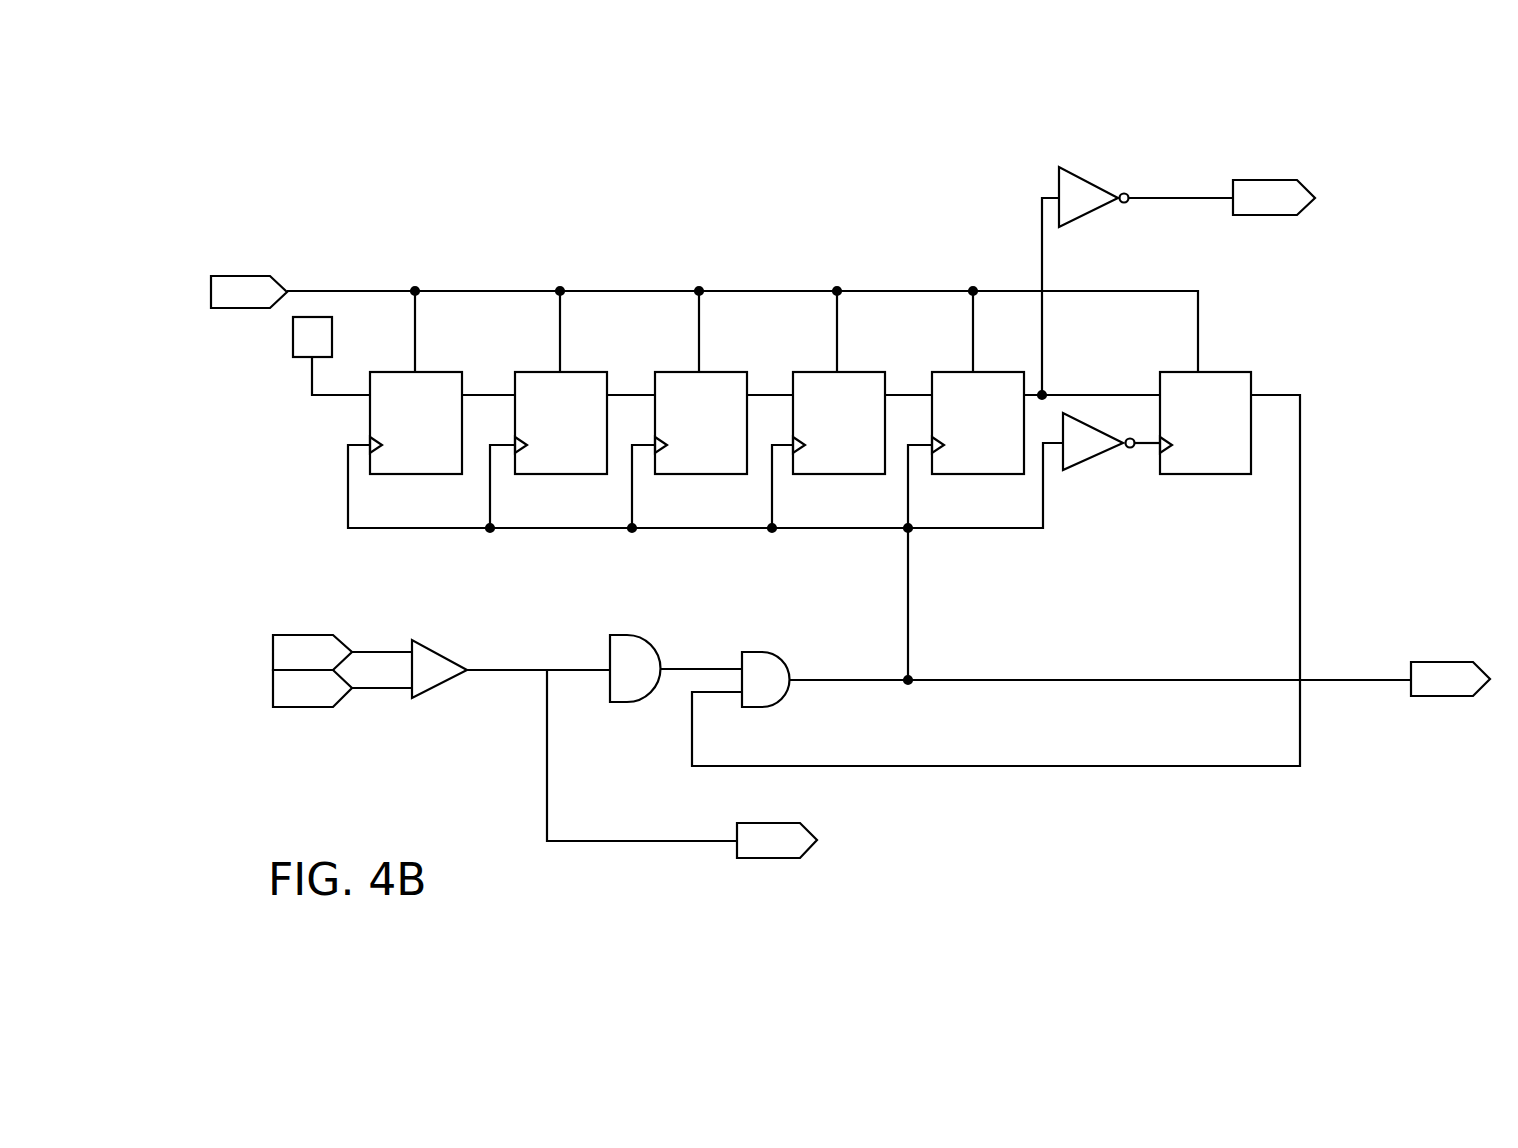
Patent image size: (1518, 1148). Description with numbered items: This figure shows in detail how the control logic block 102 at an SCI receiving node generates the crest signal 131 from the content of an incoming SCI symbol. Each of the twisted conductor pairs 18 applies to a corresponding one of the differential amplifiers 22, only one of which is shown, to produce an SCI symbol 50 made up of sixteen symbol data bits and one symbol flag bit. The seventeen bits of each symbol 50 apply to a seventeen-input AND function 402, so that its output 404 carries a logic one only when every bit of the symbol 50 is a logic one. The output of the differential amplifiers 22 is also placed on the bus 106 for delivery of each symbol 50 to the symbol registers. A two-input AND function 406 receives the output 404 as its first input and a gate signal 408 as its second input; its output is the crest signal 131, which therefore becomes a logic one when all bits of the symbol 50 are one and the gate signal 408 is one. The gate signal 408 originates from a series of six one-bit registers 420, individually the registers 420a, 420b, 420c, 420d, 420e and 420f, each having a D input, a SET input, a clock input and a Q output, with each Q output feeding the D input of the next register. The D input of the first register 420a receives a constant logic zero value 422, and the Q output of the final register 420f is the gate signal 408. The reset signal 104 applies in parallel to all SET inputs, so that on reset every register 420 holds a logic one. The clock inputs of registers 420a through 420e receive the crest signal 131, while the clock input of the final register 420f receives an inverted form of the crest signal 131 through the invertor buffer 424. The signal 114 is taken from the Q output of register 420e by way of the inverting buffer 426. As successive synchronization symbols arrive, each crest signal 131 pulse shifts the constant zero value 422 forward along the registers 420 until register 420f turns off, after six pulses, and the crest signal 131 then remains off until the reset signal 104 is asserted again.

The control logic block 102 is at (253, 232).
The reset signal 104 is at (335, 290).
The constant logic zero value 422 is at (293, 345).
The one-bit registers 420 is at (316, 429).
The first register 420a is at (402, 474).
The register 420b is at (547, 474).
The register 420c is at (687, 474).
The register 420d is at (825, 474).
The register 420e is at (945, 474).
The final register 420f is at (1192, 474).
The invertor buffer 424 is at (1063, 470).
The inverting buffer 426 is at (1074, 172).
The signal 114 is at (1172, 197).
The twisted conductor pairs 18 is at (364, 634).
The differential amplifiers 22 is at (436, 624).
The SCI symbol 50 is at (495, 675).
The seventeen-input AND function 402 is at (632, 636).
The output of AND function 404 is at (695, 668).
The two-input AND function 406 is at (768, 652).
The gate signal 408 is at (693, 748).
The crest signal 131 is at (1310, 679).
The bus 106 is at (640, 841).